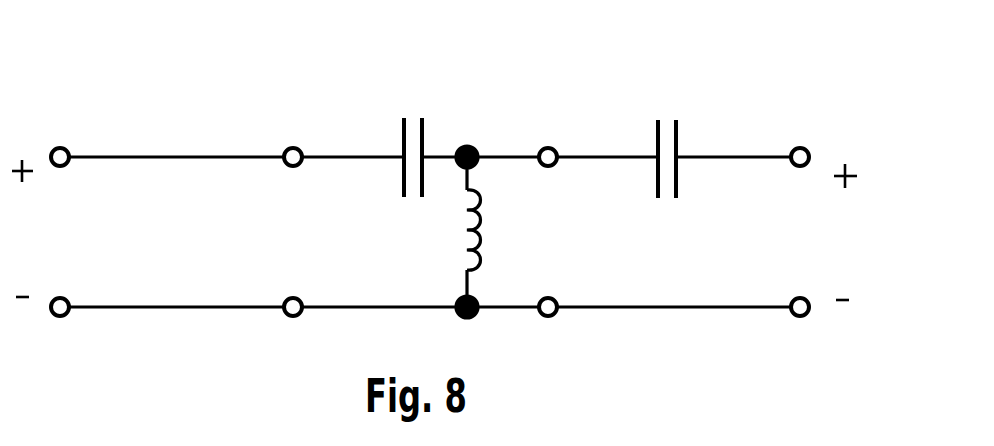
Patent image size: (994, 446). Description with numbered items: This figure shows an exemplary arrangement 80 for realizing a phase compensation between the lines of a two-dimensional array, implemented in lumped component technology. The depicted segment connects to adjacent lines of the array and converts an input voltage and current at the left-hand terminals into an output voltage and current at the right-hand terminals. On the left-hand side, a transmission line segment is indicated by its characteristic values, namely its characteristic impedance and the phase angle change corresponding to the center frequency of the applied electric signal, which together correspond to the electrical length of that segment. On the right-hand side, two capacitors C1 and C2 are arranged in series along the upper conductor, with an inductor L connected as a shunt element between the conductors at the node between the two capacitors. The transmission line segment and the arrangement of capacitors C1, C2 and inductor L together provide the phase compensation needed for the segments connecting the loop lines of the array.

The equivalent circuit of filter section 80 is at (80, 10).
The capacitor C1 is at (416, 124).
The capacitor C2 is at (669, 124).
The inductor L is at (496, 232).